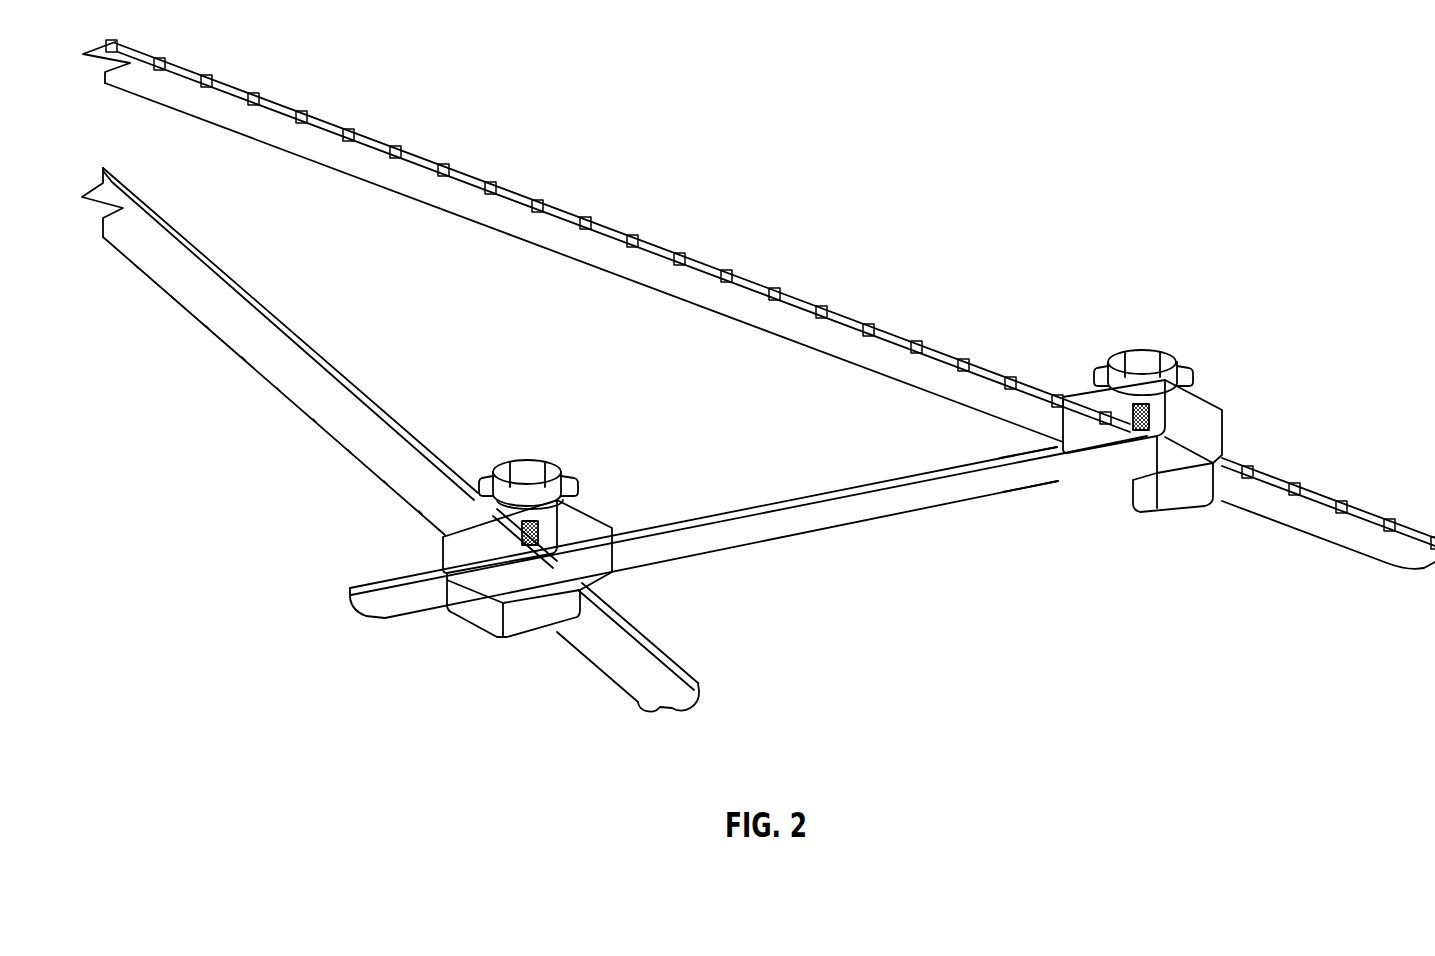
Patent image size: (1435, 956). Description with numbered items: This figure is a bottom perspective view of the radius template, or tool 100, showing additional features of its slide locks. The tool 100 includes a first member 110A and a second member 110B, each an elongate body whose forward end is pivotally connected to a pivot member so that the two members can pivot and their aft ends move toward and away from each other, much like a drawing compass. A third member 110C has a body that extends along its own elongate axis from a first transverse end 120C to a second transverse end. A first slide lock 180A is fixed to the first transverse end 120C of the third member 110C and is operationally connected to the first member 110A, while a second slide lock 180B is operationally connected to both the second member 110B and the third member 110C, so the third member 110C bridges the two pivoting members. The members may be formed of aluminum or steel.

The radius template 100 is at (697, 169).
The first member 110A is at (905, 372).
The second member 110B is at (218, 318).
The third member 110C is at (826, 518).
The first transverse end 120C is at (1063, 475).
The first slide lock 180A is at (1096, 486).
The second slide lock 180B is at (470, 545).